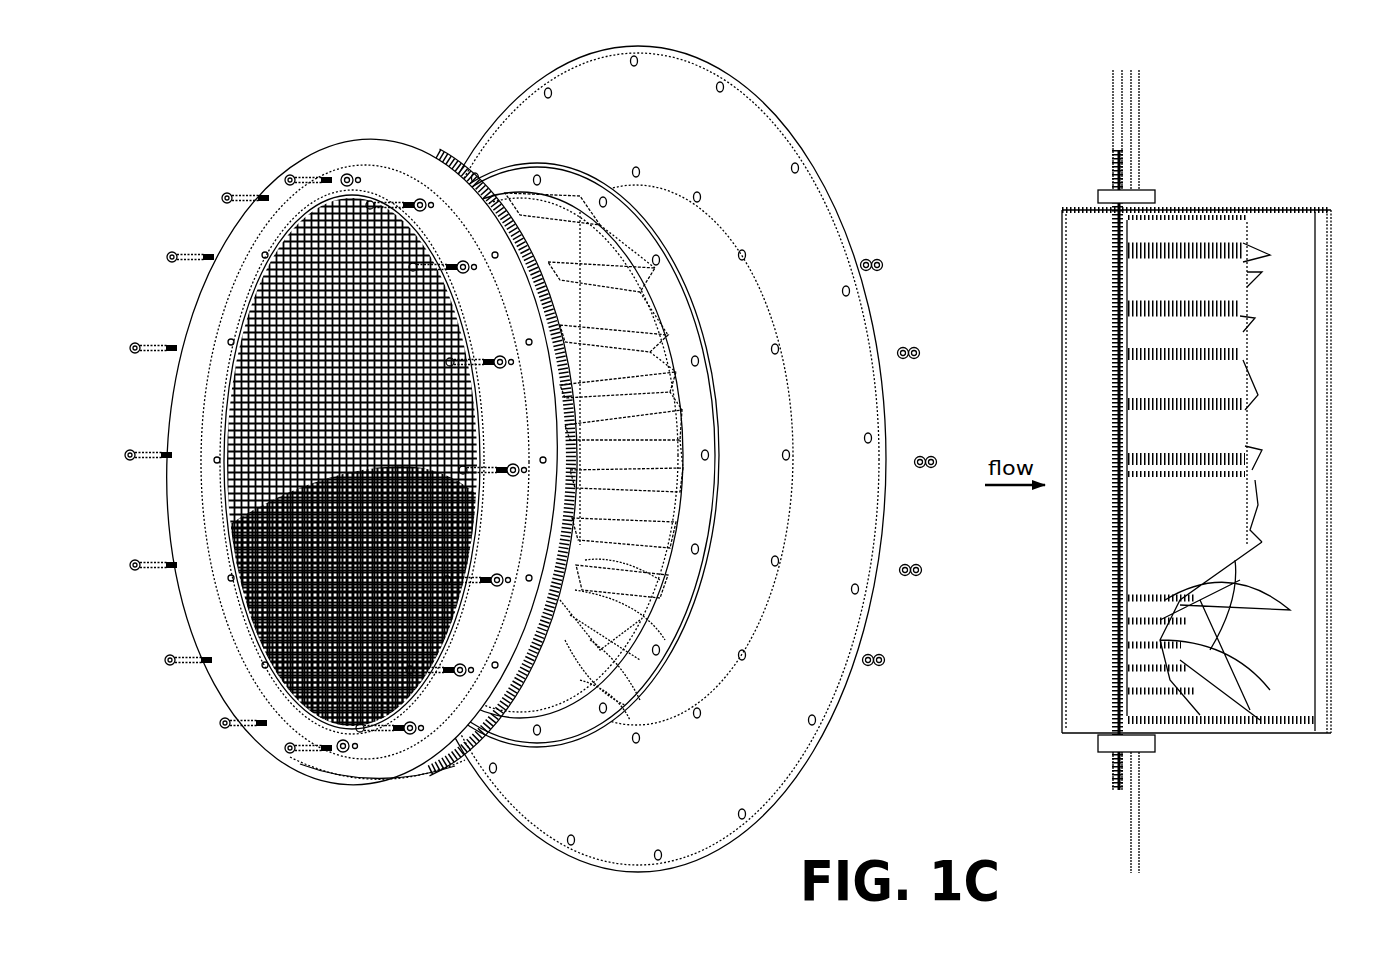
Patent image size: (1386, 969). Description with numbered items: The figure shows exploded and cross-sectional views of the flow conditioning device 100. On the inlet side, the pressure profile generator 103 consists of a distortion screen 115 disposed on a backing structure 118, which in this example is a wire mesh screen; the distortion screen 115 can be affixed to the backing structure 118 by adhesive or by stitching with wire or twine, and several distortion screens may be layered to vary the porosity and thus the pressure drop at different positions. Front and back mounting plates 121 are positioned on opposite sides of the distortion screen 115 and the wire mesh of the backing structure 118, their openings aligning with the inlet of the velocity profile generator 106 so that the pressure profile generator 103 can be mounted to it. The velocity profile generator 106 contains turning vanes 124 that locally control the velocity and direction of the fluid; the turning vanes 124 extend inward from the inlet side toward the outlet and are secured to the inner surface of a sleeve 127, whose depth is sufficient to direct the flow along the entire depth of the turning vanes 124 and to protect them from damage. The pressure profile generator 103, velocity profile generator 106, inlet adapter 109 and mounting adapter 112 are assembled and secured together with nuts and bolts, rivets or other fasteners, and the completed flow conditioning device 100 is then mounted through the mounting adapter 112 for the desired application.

The flow conditioning device 100 is at (755, 475).
The pressure profile generator 103 is at (385, 138).
The velocity profile generator 106 is at (708, 222).
The inlet adapter 109 is at (227, 243).
The mounting adapter 112 is at (808, 752).
The distortion screen 115 is at (297, 692).
The backing structure 118 is at (305, 228).
The mounting plates 121 is at (376, 777).
The turning vanes 124 is at (655, 385).
The sleeve 127 is at (742, 599).